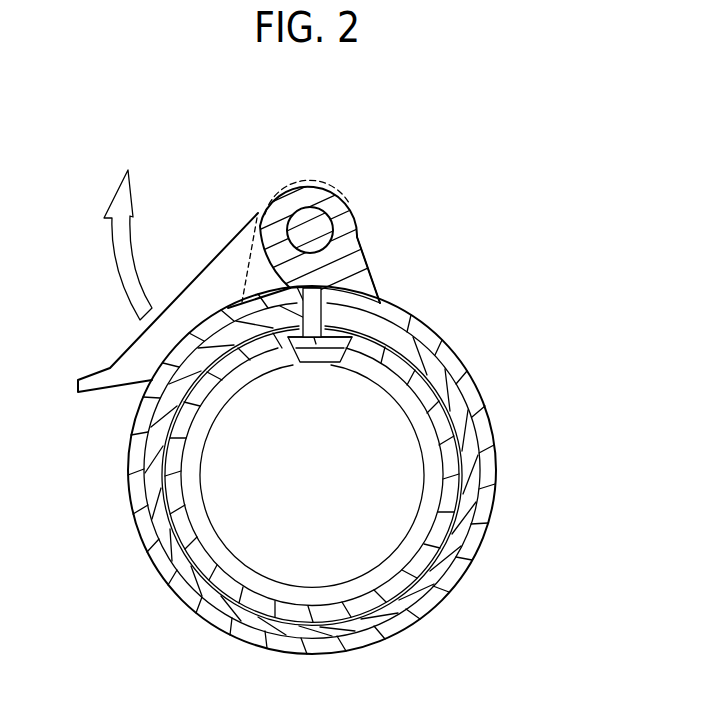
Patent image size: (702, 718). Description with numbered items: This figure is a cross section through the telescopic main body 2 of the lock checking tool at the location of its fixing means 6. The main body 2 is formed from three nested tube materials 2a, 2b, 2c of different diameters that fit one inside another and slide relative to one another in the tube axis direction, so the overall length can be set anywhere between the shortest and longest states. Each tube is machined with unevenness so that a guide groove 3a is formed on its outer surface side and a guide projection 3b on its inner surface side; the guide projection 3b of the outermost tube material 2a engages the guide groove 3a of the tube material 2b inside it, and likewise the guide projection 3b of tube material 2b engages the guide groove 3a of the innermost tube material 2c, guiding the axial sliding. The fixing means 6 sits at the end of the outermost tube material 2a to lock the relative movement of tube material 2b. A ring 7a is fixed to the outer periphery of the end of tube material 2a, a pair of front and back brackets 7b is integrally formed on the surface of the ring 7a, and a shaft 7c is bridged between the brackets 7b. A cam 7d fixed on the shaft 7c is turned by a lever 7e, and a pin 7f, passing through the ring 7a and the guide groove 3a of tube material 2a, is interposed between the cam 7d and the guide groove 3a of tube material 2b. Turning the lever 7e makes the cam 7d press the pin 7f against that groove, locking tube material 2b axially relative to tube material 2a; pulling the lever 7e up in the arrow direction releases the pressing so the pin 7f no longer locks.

The main body 2 is at (510, 373).
The tube material 2a is at (153, 492).
The tube material 2b is at (195, 557).
The tube material 2c is at (252, 585).
The guide groove 3a is at (285, 350).
The guide projection 3b is at (350, 349).
The fixing means 6 is at (352, 195).
The ring 7a is at (428, 340).
The bracket 7b is at (357, 260).
The shaft 7c is at (304, 213).
The cam 7d is at (262, 253).
The lever 7e is at (138, 352).
The pin 7f is at (330, 293).